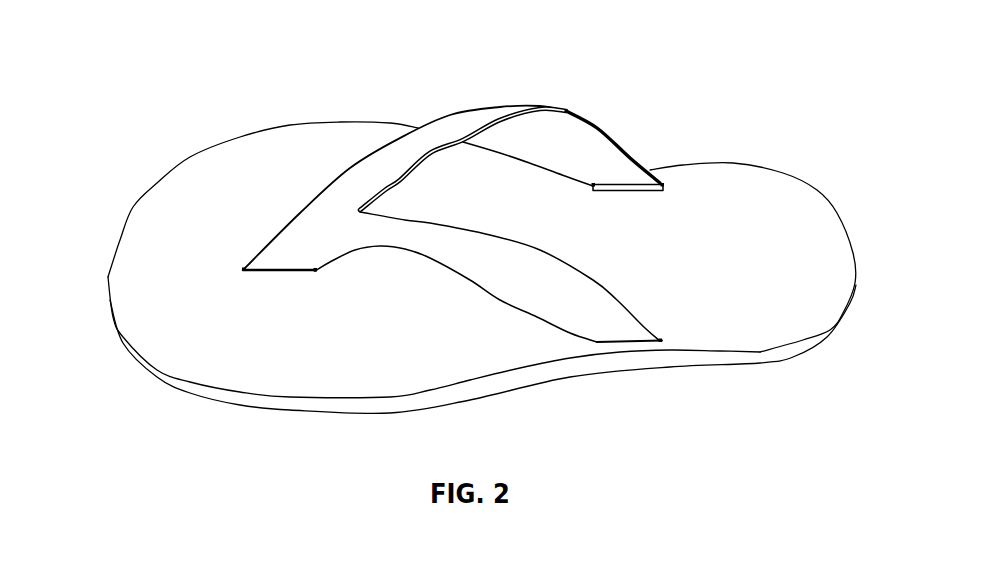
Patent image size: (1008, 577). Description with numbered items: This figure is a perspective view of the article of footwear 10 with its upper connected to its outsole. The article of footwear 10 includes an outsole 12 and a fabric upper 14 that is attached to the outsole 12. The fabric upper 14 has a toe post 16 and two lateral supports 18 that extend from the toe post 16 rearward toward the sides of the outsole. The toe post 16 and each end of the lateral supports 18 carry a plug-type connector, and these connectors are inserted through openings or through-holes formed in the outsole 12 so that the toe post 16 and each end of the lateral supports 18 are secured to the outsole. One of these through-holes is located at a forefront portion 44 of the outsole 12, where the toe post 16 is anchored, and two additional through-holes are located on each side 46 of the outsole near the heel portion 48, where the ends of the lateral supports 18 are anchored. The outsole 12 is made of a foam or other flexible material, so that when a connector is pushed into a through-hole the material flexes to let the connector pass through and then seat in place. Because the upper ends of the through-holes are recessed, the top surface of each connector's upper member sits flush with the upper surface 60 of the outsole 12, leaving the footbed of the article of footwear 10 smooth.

The article of footwear 10 is at (120, 108).
The outsole 12 is at (498, 274).
The fabric upper 14 is at (448, 197).
The toe post 16 is at (292, 245).
The lateral supports 18 is at (500, 113).
The forefront portion 44 is at (170, 208).
The side 46 is at (482, 397).
The heel portion 48 is at (830, 236).
The upper surface 60 is at (754, 266).